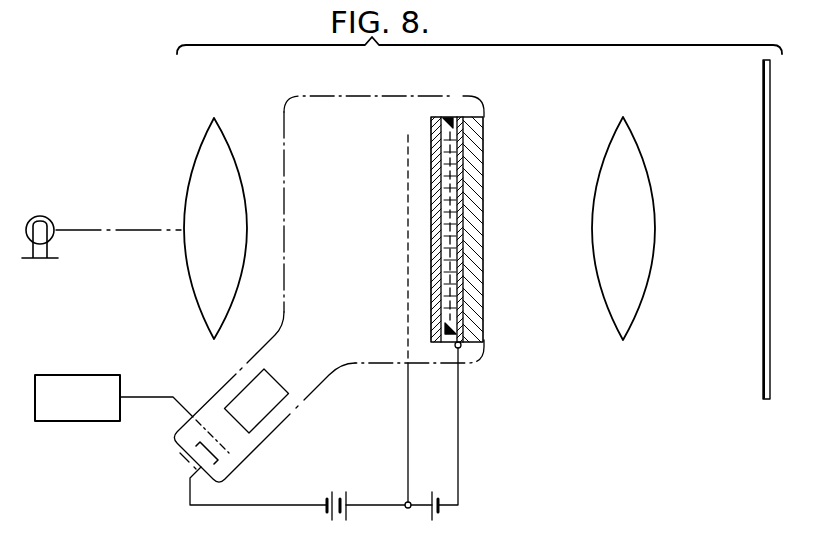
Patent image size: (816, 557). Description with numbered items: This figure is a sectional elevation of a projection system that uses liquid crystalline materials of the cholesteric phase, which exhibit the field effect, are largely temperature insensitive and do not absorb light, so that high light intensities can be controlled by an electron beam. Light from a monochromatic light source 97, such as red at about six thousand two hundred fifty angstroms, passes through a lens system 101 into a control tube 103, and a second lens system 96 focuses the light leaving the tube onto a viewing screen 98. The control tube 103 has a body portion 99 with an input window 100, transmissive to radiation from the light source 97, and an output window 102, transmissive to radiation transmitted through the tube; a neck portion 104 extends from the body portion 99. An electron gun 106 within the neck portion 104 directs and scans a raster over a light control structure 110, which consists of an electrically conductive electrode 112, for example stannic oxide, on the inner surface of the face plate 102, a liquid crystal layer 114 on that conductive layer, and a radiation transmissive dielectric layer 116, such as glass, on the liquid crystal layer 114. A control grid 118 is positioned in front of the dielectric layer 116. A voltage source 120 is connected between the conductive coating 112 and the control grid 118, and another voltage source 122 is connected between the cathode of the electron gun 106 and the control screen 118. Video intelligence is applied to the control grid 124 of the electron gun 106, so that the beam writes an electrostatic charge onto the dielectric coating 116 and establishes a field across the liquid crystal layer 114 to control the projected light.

The lens system 96 is at (621, 126).
The light source 97 is at (37, 216).
The viewing screen 98 is at (762, 91).
The body portion 99 is at (333, 96).
The input window 100 is at (283, 147).
The lens system 101 is at (212, 128).
The output window 102 is at (475, 303).
The control tube 103 is at (365, 243).
The neck portion 104 is at (322, 390).
The electron gun 106 is at (198, 442).
The light control structure 110 is at (449, 117).
The electrically conductive electrode 112 is at (461, 146).
The liquid crystal layer 114 is at (451, 171).
The dielectric layer 116 is at (432, 127).
The control grid 118 is at (408, 182).
The voltage source 120 is at (435, 499).
The voltage source 122 is at (325, 497).
The control grid 124 is at (230, 458).